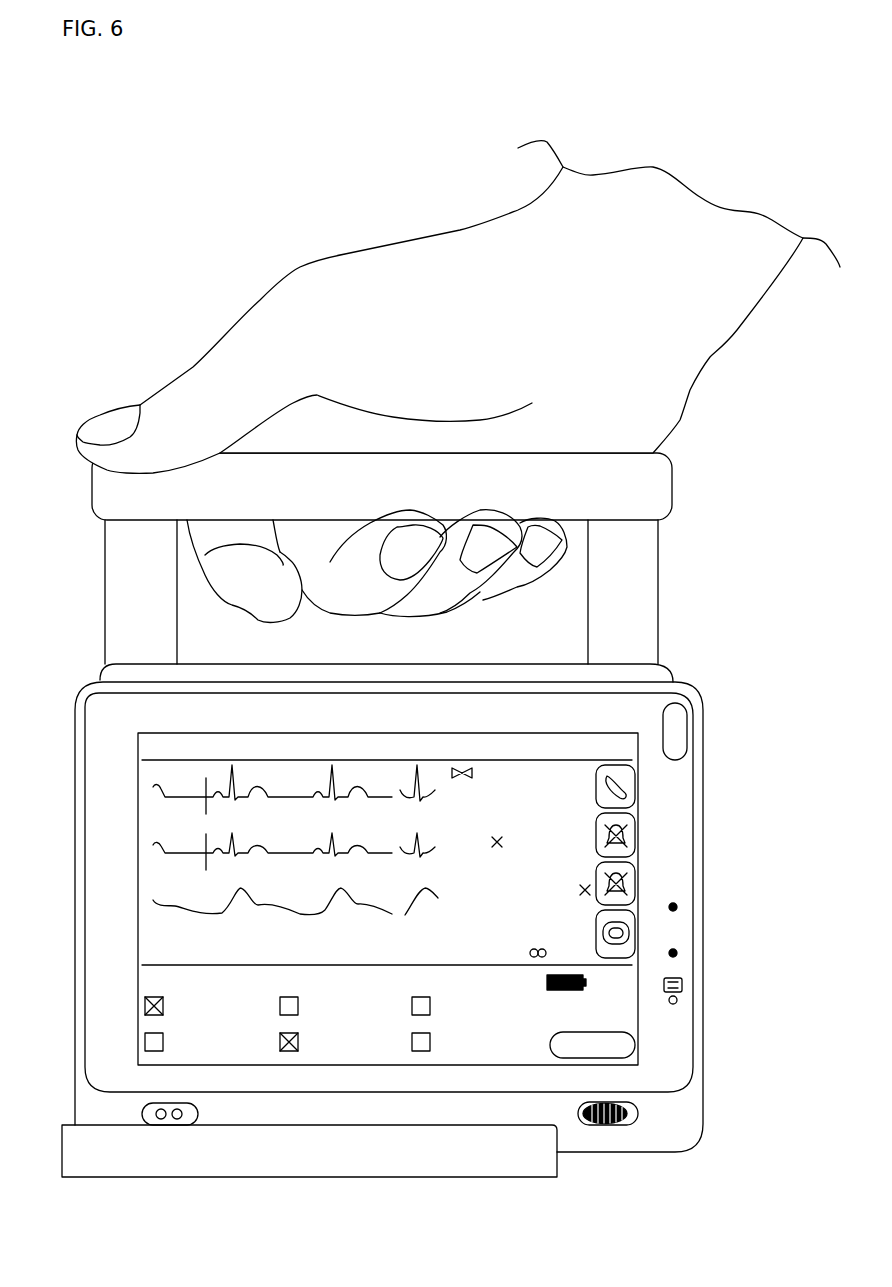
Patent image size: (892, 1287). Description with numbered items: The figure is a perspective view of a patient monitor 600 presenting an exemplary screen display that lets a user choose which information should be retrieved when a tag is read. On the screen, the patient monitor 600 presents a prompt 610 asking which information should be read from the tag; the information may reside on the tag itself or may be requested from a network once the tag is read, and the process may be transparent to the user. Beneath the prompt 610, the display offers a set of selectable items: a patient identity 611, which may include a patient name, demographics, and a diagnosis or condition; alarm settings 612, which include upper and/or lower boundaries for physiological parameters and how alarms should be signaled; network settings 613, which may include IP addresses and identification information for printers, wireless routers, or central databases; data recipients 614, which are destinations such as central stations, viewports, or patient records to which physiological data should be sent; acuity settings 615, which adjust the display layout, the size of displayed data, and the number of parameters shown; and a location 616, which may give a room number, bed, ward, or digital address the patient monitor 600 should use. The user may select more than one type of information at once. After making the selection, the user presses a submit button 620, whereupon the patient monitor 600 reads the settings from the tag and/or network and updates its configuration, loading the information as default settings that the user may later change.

The patient monitor 600 is at (762, 548).
The prompt 610 is at (138, 972).
The patient identity 611 is at (143, 1005).
The alarm settings 612 is at (398, 1013).
The network settings 613 is at (513, 1018).
The data recipients 614 is at (198, 1053).
The acuity settings 615 is at (302, 1053).
The location 616 is at (455, 1055).
The submit button 620 is at (640, 1047).